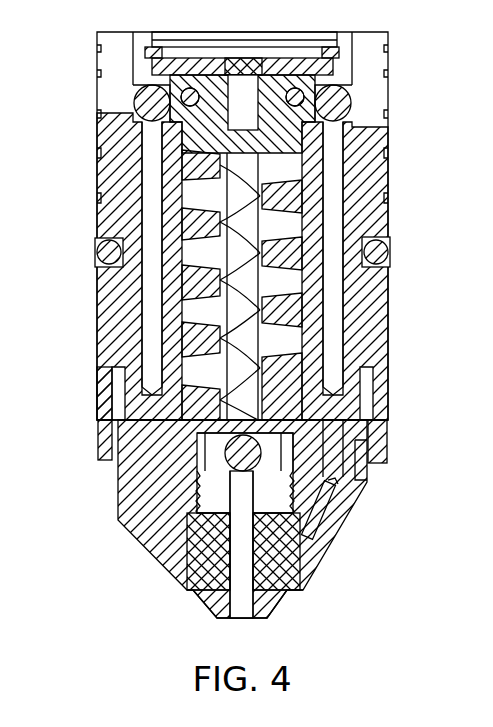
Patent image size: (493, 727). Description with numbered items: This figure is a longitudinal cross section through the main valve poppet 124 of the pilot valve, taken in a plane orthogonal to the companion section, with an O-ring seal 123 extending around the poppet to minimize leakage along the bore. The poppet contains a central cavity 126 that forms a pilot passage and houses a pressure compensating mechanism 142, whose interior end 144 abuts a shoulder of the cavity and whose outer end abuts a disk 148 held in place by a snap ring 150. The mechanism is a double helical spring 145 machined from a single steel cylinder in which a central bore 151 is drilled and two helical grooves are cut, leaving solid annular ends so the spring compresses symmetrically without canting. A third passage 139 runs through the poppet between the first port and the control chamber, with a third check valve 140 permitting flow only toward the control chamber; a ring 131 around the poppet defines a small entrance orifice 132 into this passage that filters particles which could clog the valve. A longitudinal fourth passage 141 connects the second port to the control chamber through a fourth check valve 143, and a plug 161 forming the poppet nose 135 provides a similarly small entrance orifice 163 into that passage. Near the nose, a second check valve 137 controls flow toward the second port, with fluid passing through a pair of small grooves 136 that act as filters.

The O-ring seal 123 is at (387, 253).
The main valve poppet 124 is at (86, 235).
The central cavity 126 is at (215, 206).
The ring 131 is at (95, 390).
The entrance orifice 132 is at (118, 462).
The poppet nose 135 is at (262, 618).
The small grooves 136 is at (195, 500).
The second check valve 137 is at (263, 452).
The third passage 139 is at (152, 281).
The third check valve 140 is at (133, 101).
The fourth passage 141 is at (335, 172).
The pressure compensating mechanism 142 is at (205, 152).
The fourth check valve 143 is at (341, 95).
The interior end 144 is at (118, 422).
The double helical spring 145 is at (275, 306).
The disk 148 is at (152, 64).
The snap ring 150 is at (339, 53).
The central bore 151 is at (277, 333).
The plug 161 is at (190, 580).
The entrance orifice 163 is at (303, 580).